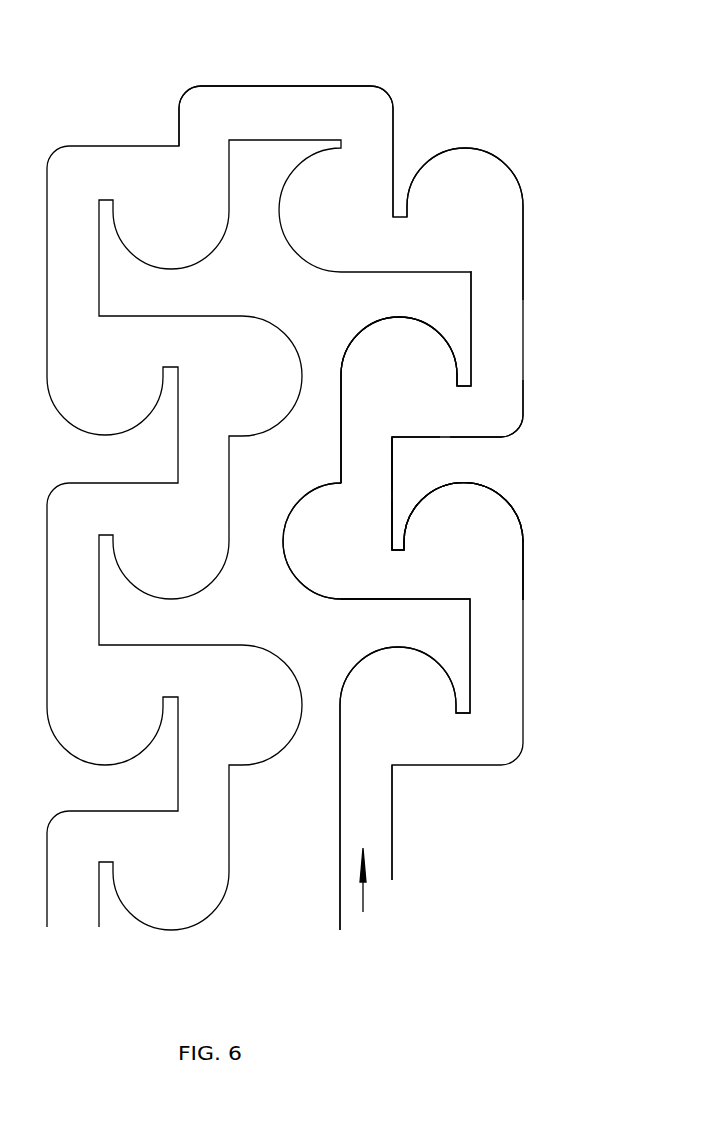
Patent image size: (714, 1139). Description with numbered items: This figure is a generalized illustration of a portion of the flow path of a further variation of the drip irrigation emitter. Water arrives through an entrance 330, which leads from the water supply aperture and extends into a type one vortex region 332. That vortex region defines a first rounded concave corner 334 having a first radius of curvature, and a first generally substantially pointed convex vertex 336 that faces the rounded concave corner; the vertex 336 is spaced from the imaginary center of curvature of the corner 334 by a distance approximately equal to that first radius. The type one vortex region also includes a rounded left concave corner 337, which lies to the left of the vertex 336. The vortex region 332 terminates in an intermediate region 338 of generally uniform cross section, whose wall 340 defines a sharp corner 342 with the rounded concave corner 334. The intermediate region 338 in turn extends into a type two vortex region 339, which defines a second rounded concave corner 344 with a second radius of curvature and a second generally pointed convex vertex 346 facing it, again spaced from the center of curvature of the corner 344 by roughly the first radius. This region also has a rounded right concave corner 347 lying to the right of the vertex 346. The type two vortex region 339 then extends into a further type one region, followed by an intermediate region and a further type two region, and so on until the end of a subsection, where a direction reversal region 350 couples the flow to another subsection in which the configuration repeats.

The direction reversal region 350 is at (303, 107).
The type one vortex region 332 is at (462, 174).
The second rounded concave corner 344 is at (387, 321).
The type two vortex region 339 is at (416, 388).
The right concave corner 347 is at (516, 432).
The second generally pointed convex vertex 346 is at (398, 437).
The intermediate region 338 is at (356, 465).
The wall 340 is at (390, 502).
The first rounded concave corner 334 is at (522, 528).
The sharp corner 342 is at (403, 552).
The left concave corner 337 is at (288, 578).
The first generally substantially pointed convex vertex 336 is at (470, 600).
The entrance 330 is at (402, 694).